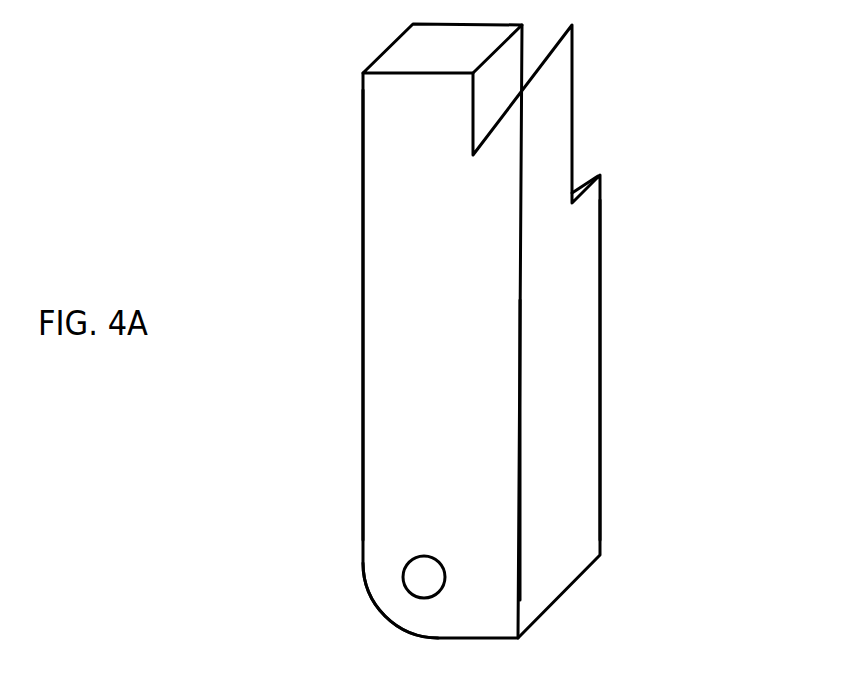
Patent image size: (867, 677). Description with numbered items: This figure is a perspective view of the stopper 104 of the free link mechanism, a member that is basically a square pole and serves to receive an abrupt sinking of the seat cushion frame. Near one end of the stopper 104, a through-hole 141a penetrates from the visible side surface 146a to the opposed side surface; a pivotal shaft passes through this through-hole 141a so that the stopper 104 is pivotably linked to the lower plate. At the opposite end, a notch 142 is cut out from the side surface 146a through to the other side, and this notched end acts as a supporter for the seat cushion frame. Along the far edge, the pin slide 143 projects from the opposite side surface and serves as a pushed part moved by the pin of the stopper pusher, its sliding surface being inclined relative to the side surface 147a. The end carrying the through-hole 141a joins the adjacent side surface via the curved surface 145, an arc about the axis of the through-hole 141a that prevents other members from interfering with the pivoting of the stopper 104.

The stopper 104 is at (624, 113).
The notch 142 is at (513, 82).
The pin slide 143 is at (600, 283).
The side surface 147a is at (560, 445).
The side surface 146a is at (446, 262).
The through-hole 141a is at (420, 572).
The curved surface 145 is at (370, 597).